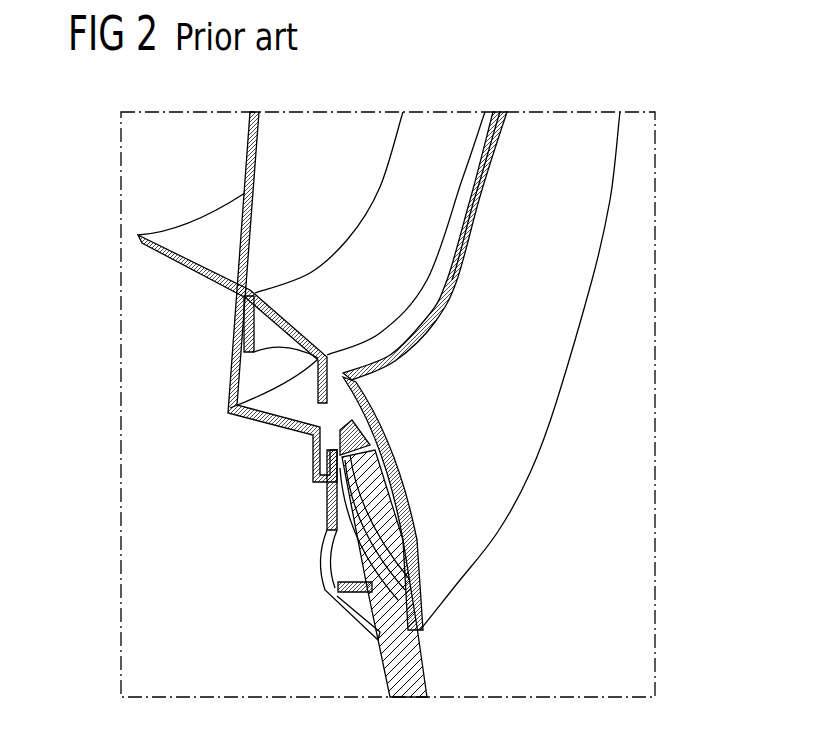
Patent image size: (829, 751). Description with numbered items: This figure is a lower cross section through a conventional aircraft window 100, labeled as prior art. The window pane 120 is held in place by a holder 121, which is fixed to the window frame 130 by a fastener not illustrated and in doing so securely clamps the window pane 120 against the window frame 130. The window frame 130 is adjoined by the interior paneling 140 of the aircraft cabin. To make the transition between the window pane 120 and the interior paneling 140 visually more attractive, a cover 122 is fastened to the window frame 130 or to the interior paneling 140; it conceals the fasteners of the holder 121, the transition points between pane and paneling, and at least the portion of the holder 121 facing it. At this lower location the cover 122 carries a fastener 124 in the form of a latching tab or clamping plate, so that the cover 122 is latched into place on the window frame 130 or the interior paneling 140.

The aircraft window 100 is at (636, 271).
The window pane 120 is at (277, 125).
The holder 121 is at (452, 122).
The cover 122 is at (542, 342).
The fastener 124 is at (355, 418).
The window frame 130 is at (208, 351).
The interior paneling 140 is at (645, 612).